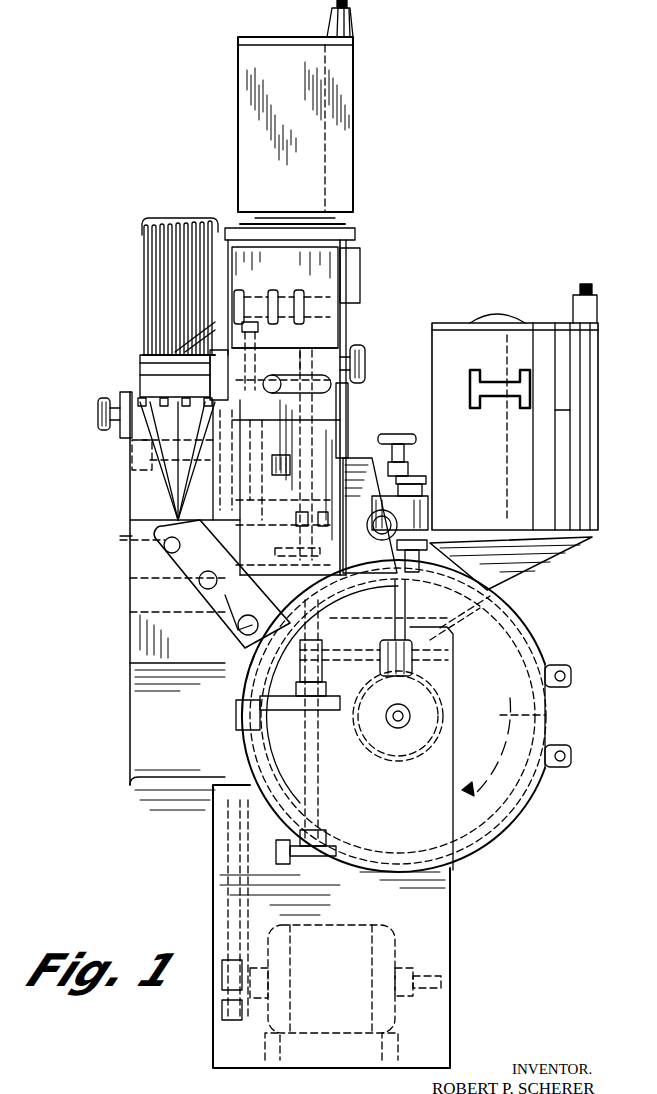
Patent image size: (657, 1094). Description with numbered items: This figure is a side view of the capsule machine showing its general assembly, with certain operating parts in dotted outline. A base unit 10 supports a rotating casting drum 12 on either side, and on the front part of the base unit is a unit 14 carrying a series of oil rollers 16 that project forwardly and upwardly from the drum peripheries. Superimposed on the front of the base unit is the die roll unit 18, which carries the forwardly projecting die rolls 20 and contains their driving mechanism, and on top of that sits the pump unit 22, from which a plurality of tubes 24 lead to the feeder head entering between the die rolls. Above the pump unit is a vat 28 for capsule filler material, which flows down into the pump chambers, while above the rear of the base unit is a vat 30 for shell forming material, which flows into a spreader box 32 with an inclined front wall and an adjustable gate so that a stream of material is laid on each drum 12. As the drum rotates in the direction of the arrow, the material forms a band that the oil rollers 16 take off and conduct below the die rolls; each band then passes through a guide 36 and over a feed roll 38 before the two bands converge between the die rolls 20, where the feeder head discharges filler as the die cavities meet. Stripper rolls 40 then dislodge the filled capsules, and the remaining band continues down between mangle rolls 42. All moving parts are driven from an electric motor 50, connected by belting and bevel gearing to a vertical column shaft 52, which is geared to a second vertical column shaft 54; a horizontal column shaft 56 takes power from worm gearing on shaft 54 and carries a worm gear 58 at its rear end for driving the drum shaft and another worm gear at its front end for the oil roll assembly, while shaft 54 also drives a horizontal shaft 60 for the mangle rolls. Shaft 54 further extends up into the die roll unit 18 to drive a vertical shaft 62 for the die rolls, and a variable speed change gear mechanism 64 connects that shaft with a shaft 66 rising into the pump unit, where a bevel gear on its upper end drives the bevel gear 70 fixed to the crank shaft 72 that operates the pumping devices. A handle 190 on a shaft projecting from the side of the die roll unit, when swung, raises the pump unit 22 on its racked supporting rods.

The base unit 10 is at (445, 938).
The casting drum 12 is at (552, 737).
The oil roller unit 14 is at (235, 590).
The oil roller 16 is at (230, 620).
The die roll unit 18 is at (345, 430).
The die roll 20 is at (120, 436).
The pump unit 22 is at (345, 333).
The tube 24 is at (148, 300).
The vat 28 is at (345, 142).
The vat 30 is at (575, 470).
The spreader box 32 is at (430, 556).
The guide 36 is at (140, 400).
The feed roll 38 is at (140, 365).
The stripper roll 40 is at (130, 463).
The mangle roll 42 is at (130, 577).
The electric motor 50 is at (356, 948).
The vertical column shaft 52 is at (322, 808).
The second vertical column shaft 54 is at (322, 680).
The horizontal column shaft 56 is at (368, 652).
The worm gear 58 is at (378, 624).
The horizontal shaft 60 is at (270, 545).
The vertical shaft 62 is at (284, 497).
The variable speed change gear mechanism 64 is at (305, 366).
The shaft 66 is at (255, 343).
The bevel gear 70 is at (246, 302).
The crank shaft 72 is at (284, 300).
The handle 190 is at (345, 397).